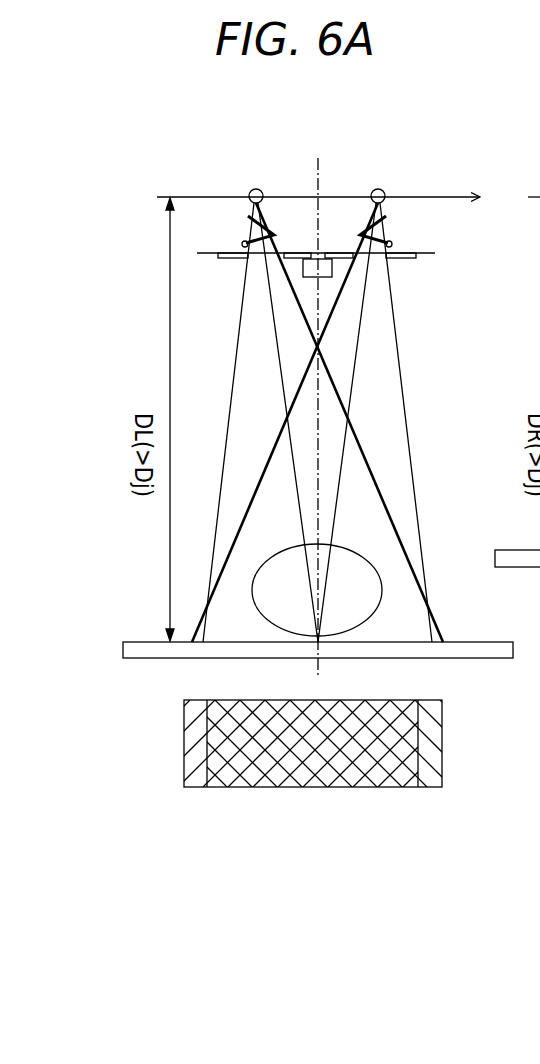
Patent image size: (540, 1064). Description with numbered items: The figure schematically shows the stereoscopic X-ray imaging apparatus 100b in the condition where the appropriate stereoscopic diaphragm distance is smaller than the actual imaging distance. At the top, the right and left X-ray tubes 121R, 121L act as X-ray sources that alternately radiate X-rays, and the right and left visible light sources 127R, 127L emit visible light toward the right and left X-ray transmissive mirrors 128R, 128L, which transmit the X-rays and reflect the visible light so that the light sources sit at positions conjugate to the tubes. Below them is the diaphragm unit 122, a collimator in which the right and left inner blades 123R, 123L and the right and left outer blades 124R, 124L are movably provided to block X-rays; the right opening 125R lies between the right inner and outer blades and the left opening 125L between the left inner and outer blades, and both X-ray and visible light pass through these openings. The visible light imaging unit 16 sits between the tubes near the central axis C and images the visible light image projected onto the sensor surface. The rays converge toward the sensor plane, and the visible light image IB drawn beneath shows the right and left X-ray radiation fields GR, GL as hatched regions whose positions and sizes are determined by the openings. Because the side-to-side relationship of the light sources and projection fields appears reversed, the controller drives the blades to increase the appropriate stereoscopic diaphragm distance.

The stereoscopic X-ray imaging apparatus 100b is at (428, 921).
The visible light imaging unit 16 is at (331, 270).
The left X-ray tube 121L is at (250, 189).
The right X-ray tube 121R is at (422, 180).
The diaphragm unit 122 is at (295, 318).
The left inner blade 123L is at (298, 259).
The right inner blade 123R is at (358, 259).
The left outer blade 124L is at (231, 259).
The right outer blade 124R is at (393, 259).
The left opening 125L is at (262, 256).
The right opening 125R is at (373, 256).
The left visible light source 127L is at (242, 242).
The right visible light source 127R is at (433, 231).
The left X-ray transmissive mirror 128L is at (266, 275).
The right X-ray transmissive mirror 128R is at (373, 278).
The center axis C is at (318, 165).
The right X-ray radiation field GR is at (184, 747).
The left X-ray radiation field GL is at (442, 747).
The captured image IB is at (317, 813).